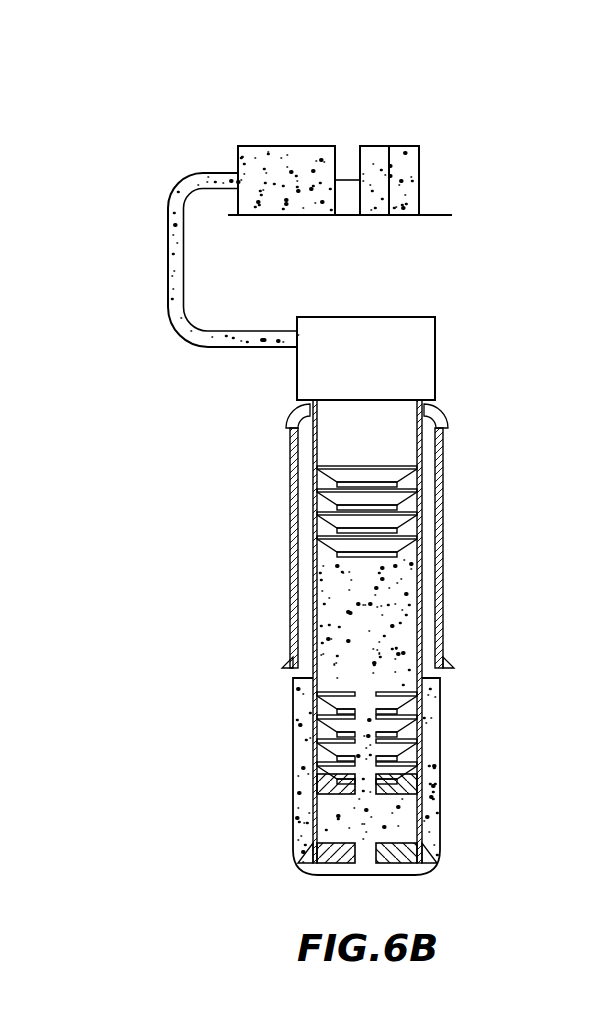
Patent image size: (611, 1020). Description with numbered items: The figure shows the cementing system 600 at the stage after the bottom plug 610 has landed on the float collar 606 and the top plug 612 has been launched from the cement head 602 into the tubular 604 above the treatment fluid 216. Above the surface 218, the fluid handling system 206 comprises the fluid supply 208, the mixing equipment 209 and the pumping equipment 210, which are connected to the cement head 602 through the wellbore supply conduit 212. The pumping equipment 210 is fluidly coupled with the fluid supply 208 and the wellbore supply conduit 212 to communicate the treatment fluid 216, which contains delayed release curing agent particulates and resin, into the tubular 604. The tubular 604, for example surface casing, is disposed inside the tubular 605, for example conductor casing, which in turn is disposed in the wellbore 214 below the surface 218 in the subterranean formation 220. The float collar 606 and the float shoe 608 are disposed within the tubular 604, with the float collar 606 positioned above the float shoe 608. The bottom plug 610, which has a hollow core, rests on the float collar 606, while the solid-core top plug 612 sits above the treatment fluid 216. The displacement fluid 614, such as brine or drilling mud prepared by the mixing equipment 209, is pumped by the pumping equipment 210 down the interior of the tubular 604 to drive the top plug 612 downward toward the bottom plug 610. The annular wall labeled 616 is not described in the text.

The fluid handling system 206 is at (455, 76).
The fluid supply 208 is at (404, 146).
The mixing equipment 209 is at (378, 146).
The pumping equipment 210 is at (300, 146).
The wellbore supply conduit 212 is at (168, 228).
The wellbore 214 is at (441, 712).
The treatment fluid 216 is at (238, 150).
The surface 218 is at (437, 215).
The subterranean formation 220 is at (536, 526).
The cementing system 600 is at (158, 458).
The cement head 602 is at (385, 317).
The tubular 604 is at (425, 468).
The tubular 605 is at (290, 447).
The float collar 606 is at (442, 786).
The float shoe 608 is at (412, 858).
The bottom plug 610 is at (424, 688).
The top plug 612 is at (424, 550).
The displacement fluid 614 is at (390, 443).
The outer sleeve wall 616 is at (432, 612).